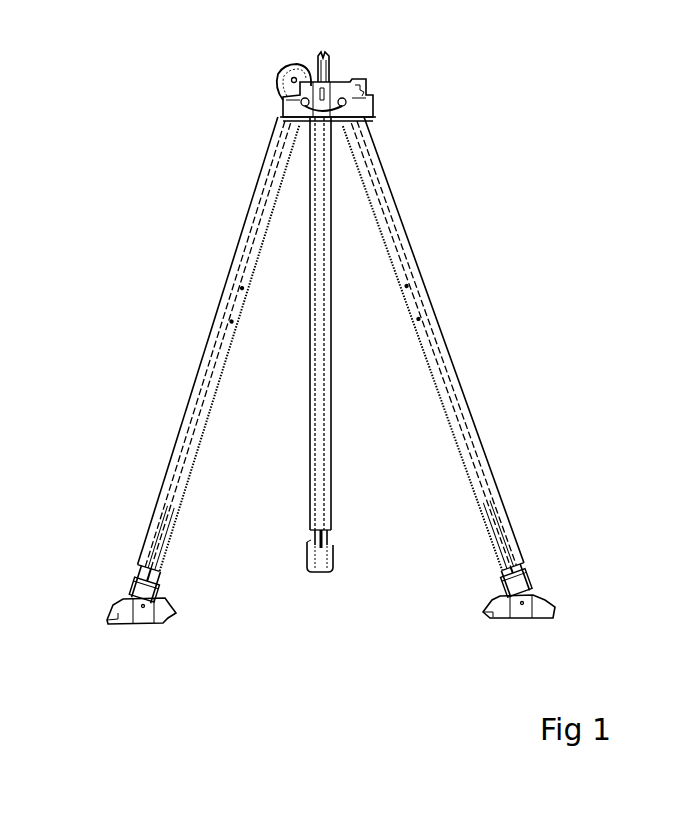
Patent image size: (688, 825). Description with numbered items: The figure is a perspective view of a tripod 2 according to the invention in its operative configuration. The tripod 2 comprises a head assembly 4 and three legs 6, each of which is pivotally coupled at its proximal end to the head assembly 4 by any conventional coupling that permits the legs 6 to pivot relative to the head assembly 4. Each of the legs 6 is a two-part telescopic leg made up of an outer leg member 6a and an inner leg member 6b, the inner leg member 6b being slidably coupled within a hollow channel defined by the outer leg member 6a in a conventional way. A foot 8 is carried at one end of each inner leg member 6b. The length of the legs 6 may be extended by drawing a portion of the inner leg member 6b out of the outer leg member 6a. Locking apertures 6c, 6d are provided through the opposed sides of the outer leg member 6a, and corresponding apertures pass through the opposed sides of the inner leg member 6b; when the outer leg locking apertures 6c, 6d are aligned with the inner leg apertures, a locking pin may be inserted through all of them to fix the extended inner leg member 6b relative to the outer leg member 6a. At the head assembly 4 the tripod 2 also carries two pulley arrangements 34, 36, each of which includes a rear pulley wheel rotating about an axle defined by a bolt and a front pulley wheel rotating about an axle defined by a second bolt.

The tripod 2 is at (499, 87).
The head assembly 4 is at (365, 90).
The pulley arrangement 34 is at (288, 70).
The pulley arrangement 36 is at (325, 60).
The legs 6 is at (205, 438).
The outer leg member 6a is at (146, 534).
The inner leg member 6b is at (133, 586).
The locking aperture 6c is at (163, 539).
The locking aperture 6d is at (156, 570).
The foot 8 is at (158, 624).